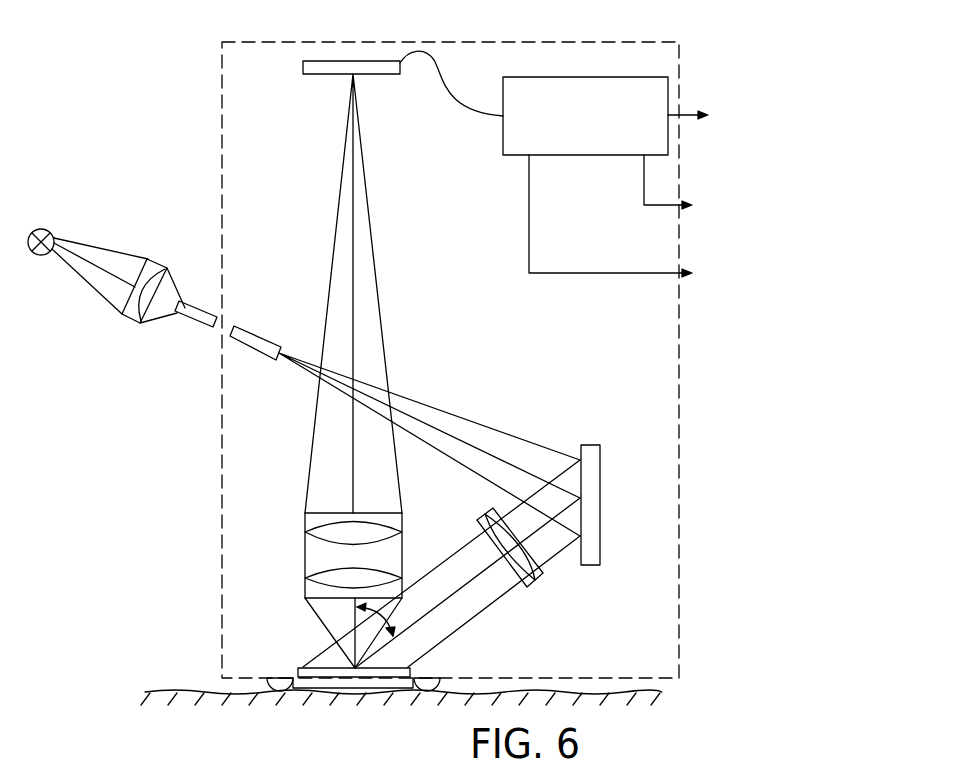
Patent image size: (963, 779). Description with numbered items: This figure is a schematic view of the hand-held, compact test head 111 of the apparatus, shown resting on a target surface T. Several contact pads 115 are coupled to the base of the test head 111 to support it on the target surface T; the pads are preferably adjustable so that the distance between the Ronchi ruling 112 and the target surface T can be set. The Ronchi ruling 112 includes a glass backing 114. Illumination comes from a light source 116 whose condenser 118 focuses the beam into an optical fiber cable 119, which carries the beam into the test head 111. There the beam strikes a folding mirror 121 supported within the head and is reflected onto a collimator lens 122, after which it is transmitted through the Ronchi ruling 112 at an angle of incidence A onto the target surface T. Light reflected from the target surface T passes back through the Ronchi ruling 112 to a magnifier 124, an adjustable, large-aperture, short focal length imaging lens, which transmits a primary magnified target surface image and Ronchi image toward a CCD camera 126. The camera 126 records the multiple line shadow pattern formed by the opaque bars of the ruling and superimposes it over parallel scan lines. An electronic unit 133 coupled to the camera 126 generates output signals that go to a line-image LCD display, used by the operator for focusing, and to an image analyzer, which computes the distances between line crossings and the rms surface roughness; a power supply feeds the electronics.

The test head 111 is at (463, 42).
The Ronchi ruling 112 is at (412, 671).
The glass backing 114 is at (303, 666).
The contact pads 115 is at (404, 691).
The light source 116 is at (45, 228).
The condenser 118 is at (150, 258).
The optical fiber cable 119 is at (263, 333).
The folding mirror 121 is at (588, 445).
The collimator lens 122 is at (537, 583).
The magnifier 124 is at (303, 520).
The CCD camera 126 is at (332, 75).
The electronic unit 133 is at (503, 137).
The angle of incidence A is at (398, 616).
The target surface T is at (186, 691).